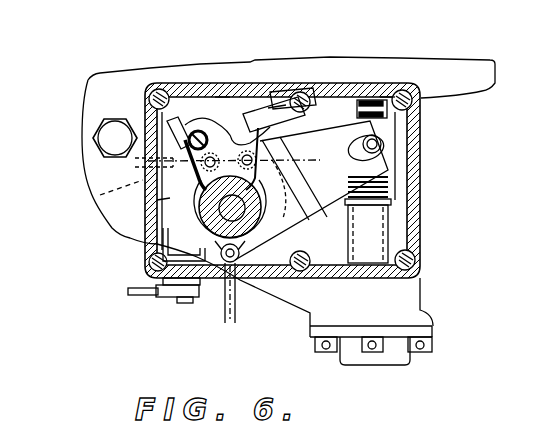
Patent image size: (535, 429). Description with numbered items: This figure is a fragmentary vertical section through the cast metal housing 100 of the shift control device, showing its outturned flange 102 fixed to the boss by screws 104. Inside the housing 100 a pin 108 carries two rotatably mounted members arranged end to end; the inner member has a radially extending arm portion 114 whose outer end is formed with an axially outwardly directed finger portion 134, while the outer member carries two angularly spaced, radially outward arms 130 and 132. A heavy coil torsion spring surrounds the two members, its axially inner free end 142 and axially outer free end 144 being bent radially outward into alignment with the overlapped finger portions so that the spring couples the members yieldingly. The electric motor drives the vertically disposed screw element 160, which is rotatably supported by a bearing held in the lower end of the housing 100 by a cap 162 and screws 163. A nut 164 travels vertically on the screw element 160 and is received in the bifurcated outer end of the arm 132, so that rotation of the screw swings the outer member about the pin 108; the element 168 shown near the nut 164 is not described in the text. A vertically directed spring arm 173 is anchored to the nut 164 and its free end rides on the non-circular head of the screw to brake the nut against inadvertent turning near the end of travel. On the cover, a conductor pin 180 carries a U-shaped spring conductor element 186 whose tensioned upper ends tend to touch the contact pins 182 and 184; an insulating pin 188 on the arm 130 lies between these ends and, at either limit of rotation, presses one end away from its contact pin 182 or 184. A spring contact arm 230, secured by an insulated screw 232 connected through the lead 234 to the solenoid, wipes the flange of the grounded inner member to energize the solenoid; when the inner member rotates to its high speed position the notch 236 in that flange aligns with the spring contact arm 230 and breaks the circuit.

The housing 100 is at (185, 80).
The outturned flange 102 is at (86, 175).
The screws 104 is at (95, 137).
The pin 108 is at (277, 228).
The arm portion 114 is at (249, 96).
The arm 130 is at (222, 97).
The arm 132 is at (335, 97).
The finger portion 134 is at (277, 93).
The spring end 142 is at (147, 115).
The spring end 144 is at (272, 106).
The screw element 160 is at (392, 210).
The cap 162 is at (392, 357).
The screws 163 is at (426, 343).
The nut 164 is at (392, 189).
The pivot lug 168 is at (382, 147).
The spring arm 173 is at (378, 98).
The conductor pin 180 is at (205, 262).
The contact pin 182 is at (195, 172).
The contact pin 184 is at (296, 142).
The spring conductor element 186 is at (157, 200).
The pin 188 is at (218, 124).
The spring contact arm 230 is at (163, 242).
The screw 232 is at (192, 303).
The lead 234 is at (123, 293).
The notch 236 is at (100, 195).